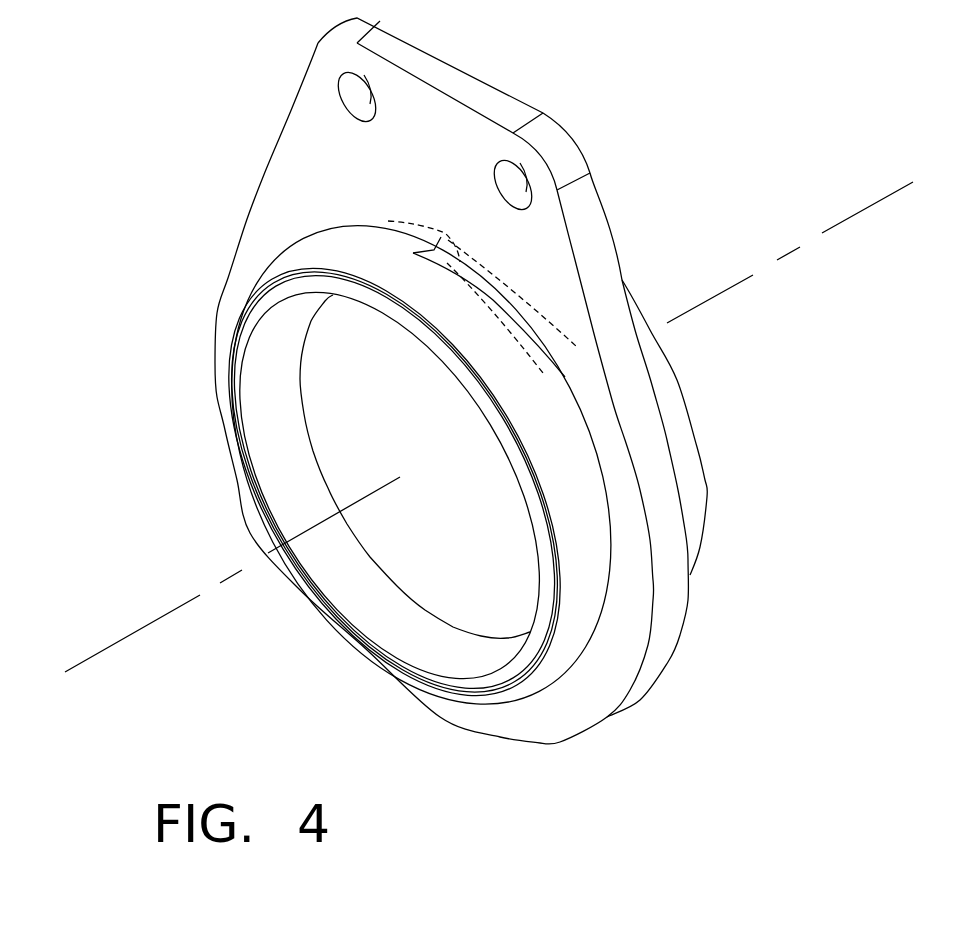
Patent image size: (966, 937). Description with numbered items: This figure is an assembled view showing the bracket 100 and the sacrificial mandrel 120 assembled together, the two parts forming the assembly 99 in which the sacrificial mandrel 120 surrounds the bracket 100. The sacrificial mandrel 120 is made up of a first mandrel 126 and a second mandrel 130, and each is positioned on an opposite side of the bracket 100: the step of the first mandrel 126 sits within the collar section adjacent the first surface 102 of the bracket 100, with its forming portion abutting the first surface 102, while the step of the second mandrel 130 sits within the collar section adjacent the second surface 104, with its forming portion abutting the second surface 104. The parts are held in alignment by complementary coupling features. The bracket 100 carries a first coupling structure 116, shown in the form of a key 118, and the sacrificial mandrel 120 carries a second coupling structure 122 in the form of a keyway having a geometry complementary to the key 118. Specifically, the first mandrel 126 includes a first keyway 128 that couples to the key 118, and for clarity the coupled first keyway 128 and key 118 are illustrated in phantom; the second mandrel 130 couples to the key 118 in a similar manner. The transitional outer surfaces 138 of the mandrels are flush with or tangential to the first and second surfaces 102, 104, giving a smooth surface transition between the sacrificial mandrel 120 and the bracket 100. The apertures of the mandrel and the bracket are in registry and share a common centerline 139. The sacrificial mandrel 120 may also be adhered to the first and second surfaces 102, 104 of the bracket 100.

The fluid connector assembly 99 is at (639, 75).
The bracket 100 is at (201, 114).
The first surface 102 is at (292, 173).
The second surface 104 is at (603, 203).
The first coupling structure 116 is at (464, 237).
The key 118 is at (461, 258).
The sacrificial mandrel 120 is at (557, 774).
The second coupling structure 122 is at (432, 368).
The first mandrel 126 is at (318, 631).
The first keyway 128 is at (459, 279).
The second mandrel 130 is at (741, 474).
The transitional outer surfaces 138 is at (697, 507).
The common centerline 139 is at (740, 283).